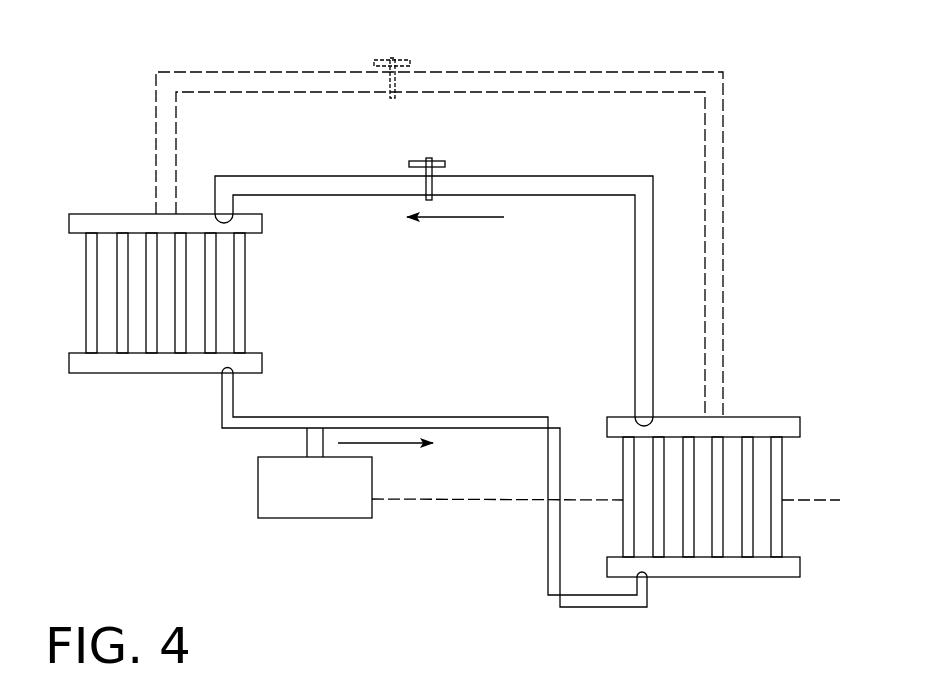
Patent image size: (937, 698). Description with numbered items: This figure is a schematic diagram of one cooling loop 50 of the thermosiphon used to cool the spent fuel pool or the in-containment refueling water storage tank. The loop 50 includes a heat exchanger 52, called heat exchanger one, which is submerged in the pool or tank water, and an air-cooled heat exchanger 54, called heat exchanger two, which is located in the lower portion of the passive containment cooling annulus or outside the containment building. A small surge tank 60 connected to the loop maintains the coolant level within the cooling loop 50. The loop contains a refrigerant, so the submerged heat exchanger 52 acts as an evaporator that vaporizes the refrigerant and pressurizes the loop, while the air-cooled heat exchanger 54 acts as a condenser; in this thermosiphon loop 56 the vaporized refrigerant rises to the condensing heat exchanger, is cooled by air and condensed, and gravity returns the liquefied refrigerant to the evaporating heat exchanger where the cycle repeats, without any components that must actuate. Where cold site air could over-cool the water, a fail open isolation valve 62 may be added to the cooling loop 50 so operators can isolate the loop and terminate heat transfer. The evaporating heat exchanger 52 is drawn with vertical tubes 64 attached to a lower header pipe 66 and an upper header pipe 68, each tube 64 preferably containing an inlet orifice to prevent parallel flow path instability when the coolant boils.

The cooling loop 50 is at (589, 72).
The heat exchanger 1 52 is at (740, 498).
The air-cooled heat exchanger 2 54 is at (117, 203).
The thermosiphon loop 56 is at (322, 160).
The surge tank 60 is at (310, 518).
The fail open isolation valve 62 is at (404, 62).
The vertical tubes 64 is at (782, 528).
The lower header pipe 66 is at (758, 577).
The upper header pipe 68 is at (748, 417).